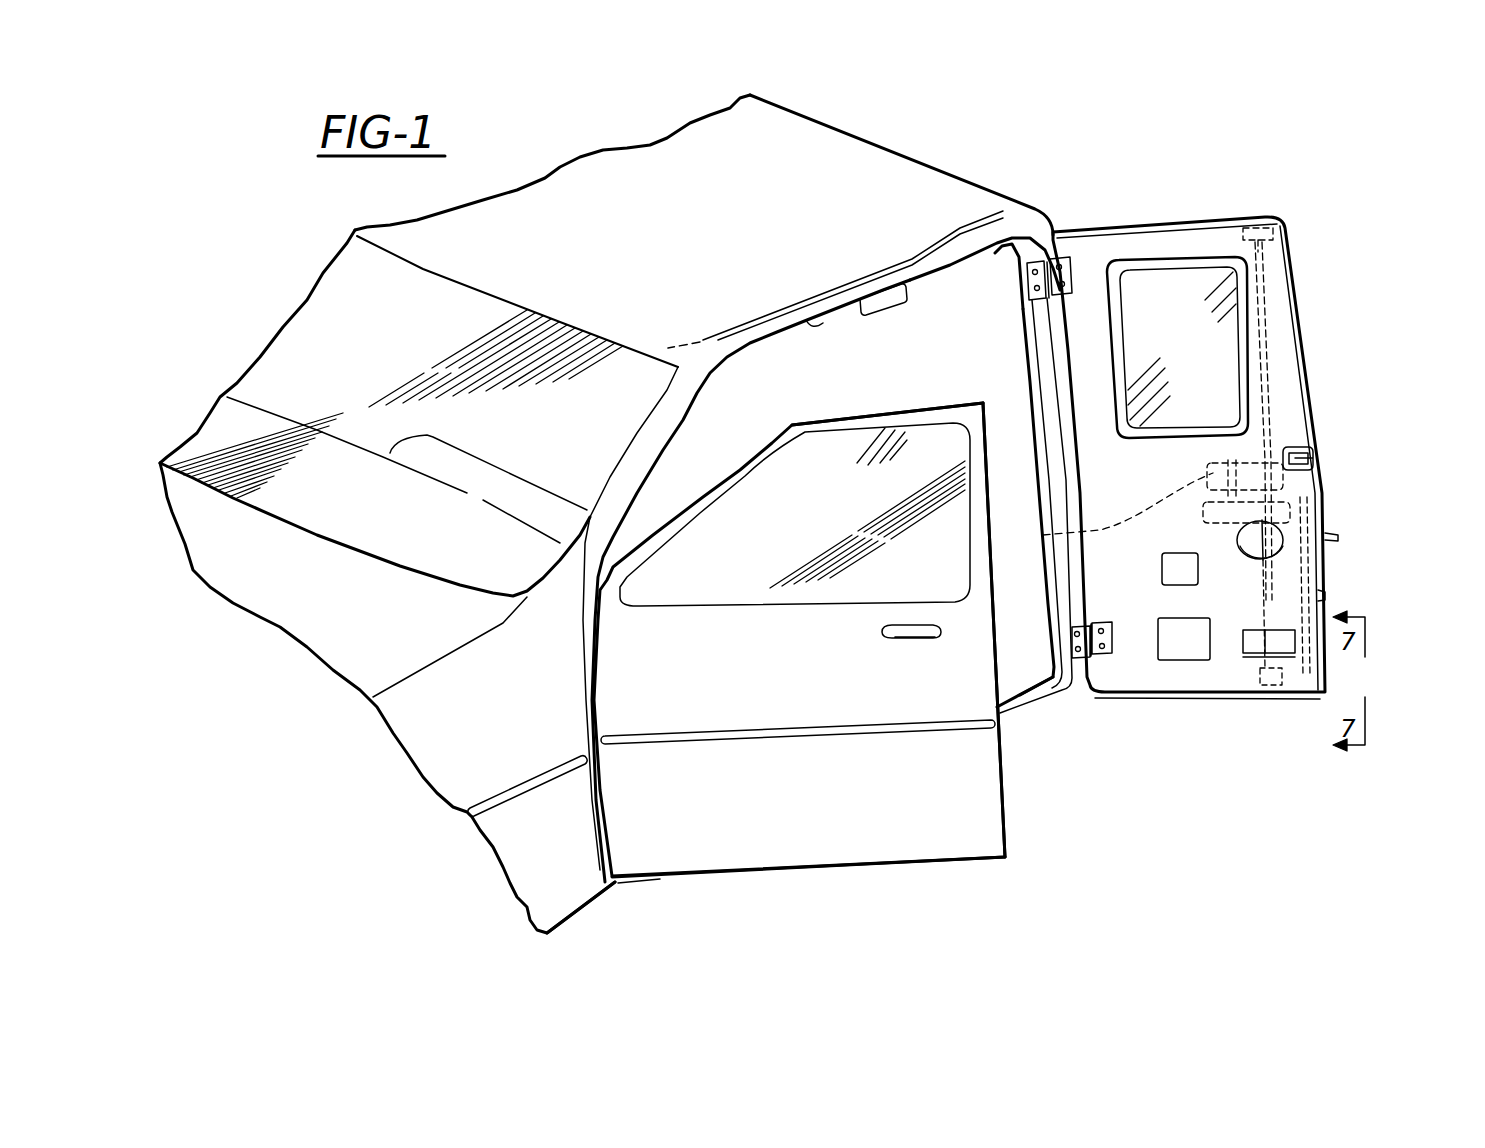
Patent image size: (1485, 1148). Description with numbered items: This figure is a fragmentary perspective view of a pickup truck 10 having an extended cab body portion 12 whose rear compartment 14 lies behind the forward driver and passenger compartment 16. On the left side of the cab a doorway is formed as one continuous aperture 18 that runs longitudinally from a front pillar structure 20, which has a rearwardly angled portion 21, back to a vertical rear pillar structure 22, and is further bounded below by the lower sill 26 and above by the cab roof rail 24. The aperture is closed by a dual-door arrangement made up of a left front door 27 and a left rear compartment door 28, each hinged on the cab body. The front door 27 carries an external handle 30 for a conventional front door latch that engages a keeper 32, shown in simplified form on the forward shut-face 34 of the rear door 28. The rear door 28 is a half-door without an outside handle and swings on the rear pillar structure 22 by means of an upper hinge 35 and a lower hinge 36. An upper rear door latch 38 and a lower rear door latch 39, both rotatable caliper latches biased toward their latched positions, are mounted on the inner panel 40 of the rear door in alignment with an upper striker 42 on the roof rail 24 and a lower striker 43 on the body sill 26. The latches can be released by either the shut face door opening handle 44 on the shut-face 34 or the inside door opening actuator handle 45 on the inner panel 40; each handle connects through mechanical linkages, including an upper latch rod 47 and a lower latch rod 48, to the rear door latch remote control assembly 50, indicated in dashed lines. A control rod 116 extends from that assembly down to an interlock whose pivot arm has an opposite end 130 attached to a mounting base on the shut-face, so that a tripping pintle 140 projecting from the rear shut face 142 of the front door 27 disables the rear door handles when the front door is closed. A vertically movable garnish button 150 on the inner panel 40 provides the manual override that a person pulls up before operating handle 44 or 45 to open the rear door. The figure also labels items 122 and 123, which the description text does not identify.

The pickup truck 10 is at (1083, 179).
The extended cab body portion 12 is at (962, 170).
The rear compartment 14 is at (970, 277).
The forward driver and passenger compartment 16 is at (747, 385).
The continuous aperture 18 is at (850, 302).
The front pillar structure 20 is at (590, 716).
The rearwardly angled portion 21 is at (653, 450).
The vertical rear pillar structure 22 is at (1038, 320).
The cab roof rail 24 is at (803, 317).
The lower sill 26 is at (1032, 692).
The left front door 27 is at (913, 404).
The left rear compartment door 28 is at (1297, 280).
The external handle 30 is at (913, 641).
The keeper 32 is at (1328, 537).
The forward shut-face 34 is at (1303, 327).
The upper hinge 35 is at (1068, 275).
The lower hinge 36 is at (1080, 643).
The upper rear door latch 38 is at (1263, 217).
The lower rear door latch 39 is at (1267, 693).
The inner panel 40 is at (1267, 250).
The upper striker 42 is at (897, 283).
The lower striker 43 is at (1050, 707).
The shut face door opening handle 44 is at (1317, 508).
The inside door opening actuator handle 45 is at (1320, 467).
The upper latch rod 47 is at (1267, 367).
The lower latch rod 48 is at (1283, 533).
The rear door latch remote control assembly 50 is at (1296, 484).
The control rod 116 is at (1323, 597).
The lower link housing 122 is at (1203, 510).
The release cable 123 is at (1100, 516).
The opposite end of pivot arm 130 is at (1323, 657).
The tripping pintle 140 is at (1004, 808).
The rear shut face 142 is at (1007, 857).
The garnish button 150 is at (1223, 460).